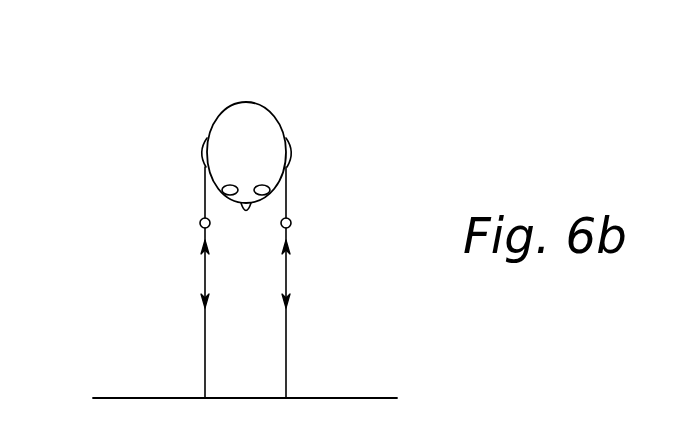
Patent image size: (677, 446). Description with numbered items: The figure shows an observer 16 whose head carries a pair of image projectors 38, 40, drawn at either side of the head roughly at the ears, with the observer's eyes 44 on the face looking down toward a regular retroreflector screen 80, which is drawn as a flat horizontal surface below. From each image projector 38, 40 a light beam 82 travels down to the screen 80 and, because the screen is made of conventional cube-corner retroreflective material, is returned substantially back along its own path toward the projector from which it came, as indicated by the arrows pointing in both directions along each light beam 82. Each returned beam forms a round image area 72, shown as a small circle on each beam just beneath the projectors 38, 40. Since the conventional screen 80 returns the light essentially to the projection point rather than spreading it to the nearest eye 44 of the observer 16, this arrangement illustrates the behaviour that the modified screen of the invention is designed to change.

The observer 16 is at (230, 110).
The image projector 38 is at (204, 163).
The image projector 40 is at (293, 164).
The observer eyes 44 is at (272, 199).
The round image area 72 is at (291, 226).
The regular retroreflector screen 80 is at (392, 398).
The light beams 82 is at (204, 343).